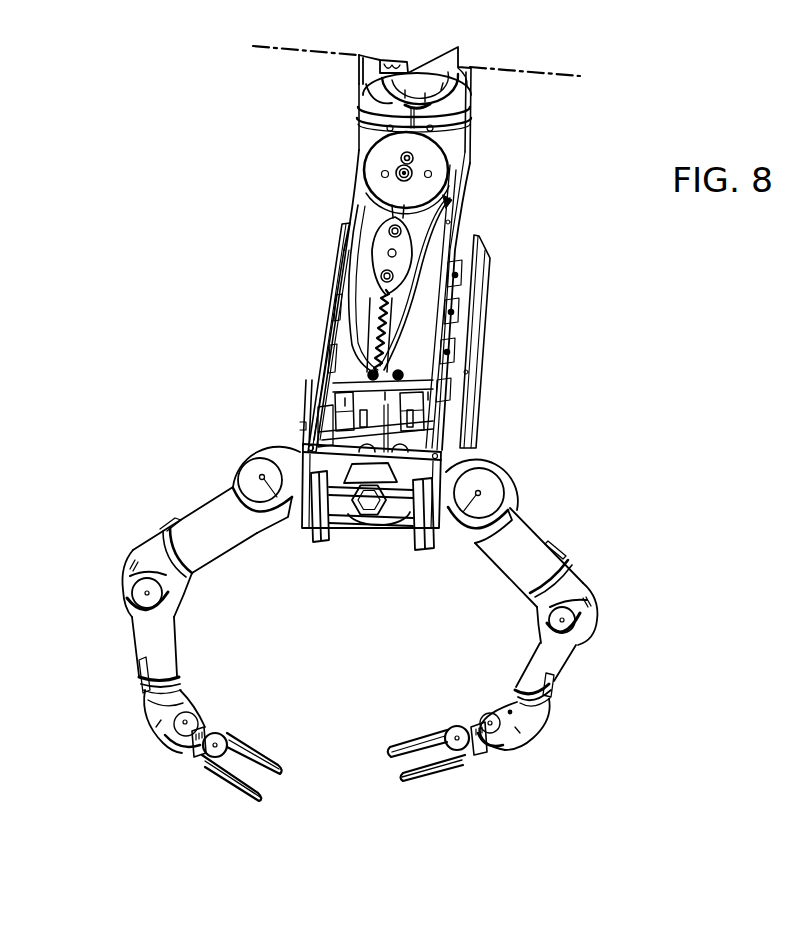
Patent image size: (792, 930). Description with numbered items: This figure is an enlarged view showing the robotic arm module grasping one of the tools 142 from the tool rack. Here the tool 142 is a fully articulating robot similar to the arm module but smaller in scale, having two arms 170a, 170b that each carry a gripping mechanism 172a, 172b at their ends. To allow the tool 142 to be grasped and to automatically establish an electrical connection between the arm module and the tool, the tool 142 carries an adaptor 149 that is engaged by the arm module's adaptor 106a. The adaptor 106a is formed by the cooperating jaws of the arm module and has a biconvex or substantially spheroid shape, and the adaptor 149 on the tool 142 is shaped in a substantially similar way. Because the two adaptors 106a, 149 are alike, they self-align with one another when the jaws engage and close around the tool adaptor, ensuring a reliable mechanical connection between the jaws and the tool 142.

The adaptor 106a is at (354, 256).
The adaptor 149 is at (383, 240).
The tool 142 is at (466, 357).
The arm 170a is at (114, 648).
The arm 170b is at (586, 676).
The gripping mechanism 172a is at (210, 795).
The gripping mechanism 172b is at (434, 795).